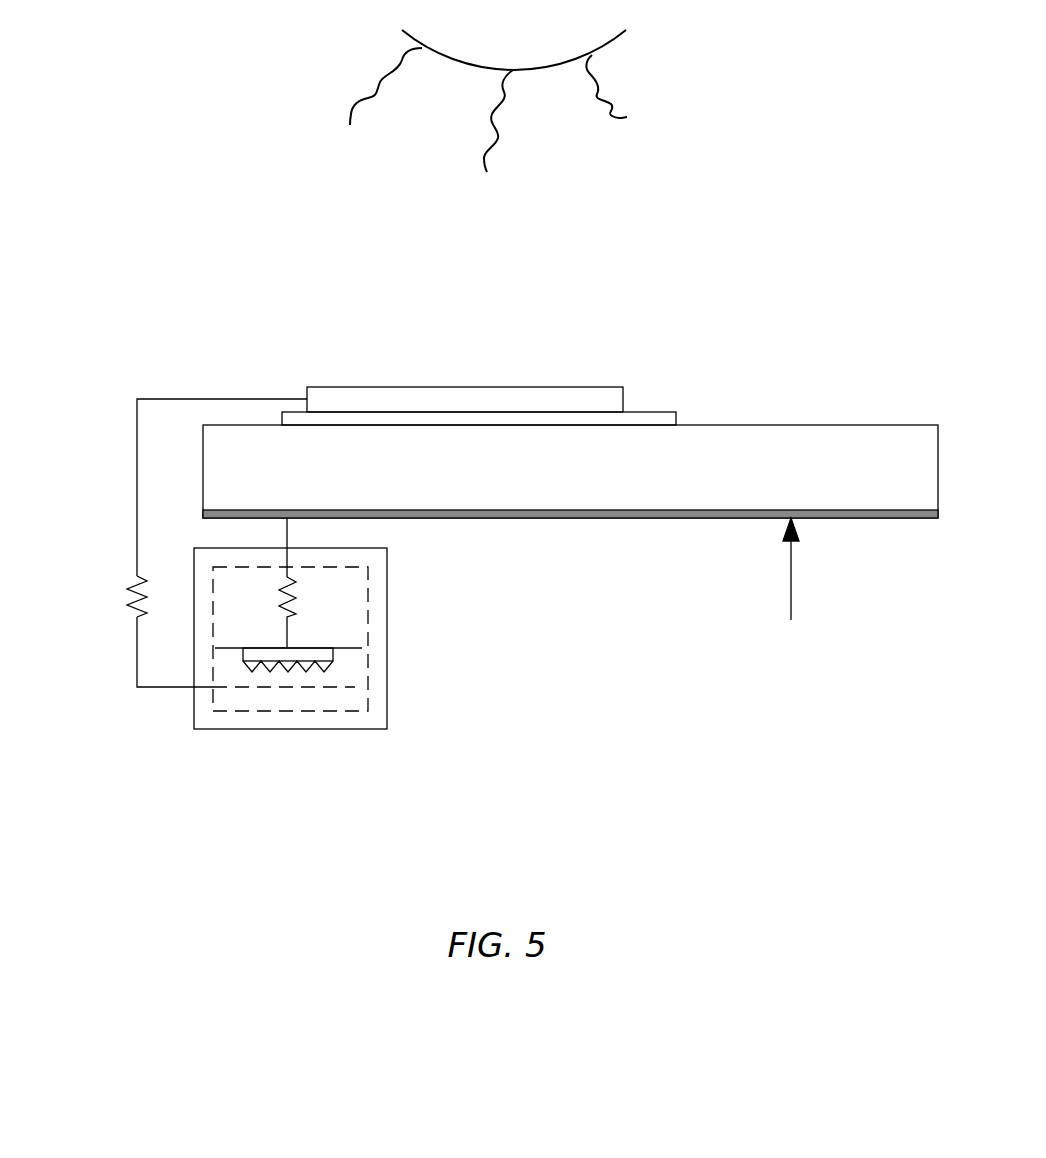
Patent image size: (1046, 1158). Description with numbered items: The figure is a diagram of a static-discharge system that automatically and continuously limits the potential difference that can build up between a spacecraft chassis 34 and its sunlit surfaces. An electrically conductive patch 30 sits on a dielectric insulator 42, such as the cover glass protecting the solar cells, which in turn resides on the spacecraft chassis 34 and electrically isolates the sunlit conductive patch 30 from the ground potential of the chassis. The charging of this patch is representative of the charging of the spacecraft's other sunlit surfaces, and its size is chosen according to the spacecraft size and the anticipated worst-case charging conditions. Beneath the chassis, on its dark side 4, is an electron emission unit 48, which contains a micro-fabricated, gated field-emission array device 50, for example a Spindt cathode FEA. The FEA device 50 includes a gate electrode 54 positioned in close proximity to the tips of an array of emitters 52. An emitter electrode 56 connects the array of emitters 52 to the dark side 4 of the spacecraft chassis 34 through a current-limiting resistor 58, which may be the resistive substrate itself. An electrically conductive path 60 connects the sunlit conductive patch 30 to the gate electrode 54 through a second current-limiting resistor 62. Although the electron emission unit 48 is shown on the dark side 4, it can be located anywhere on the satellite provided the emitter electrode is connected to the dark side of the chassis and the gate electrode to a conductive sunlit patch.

The dark side 4 is at (791, 585).
The electrically conductive patch 30 is at (532, 387).
The spacecraft chassis 34 is at (771, 438).
The dielectric insulator 42 is at (660, 413).
The electron emission unit 48 is at (192, 546).
The gated field-emission array (FEA) device 50 is at (368, 642).
The array of emitters 52 is at (333, 665).
The gate electrode 54 is at (282, 690).
The emitter electrode 56 is at (287, 527).
The current-limiting resistor 58 is at (295, 593).
The electrically conductive path 60 is at (183, 399).
The current-limiting resistor 62 is at (146, 578).